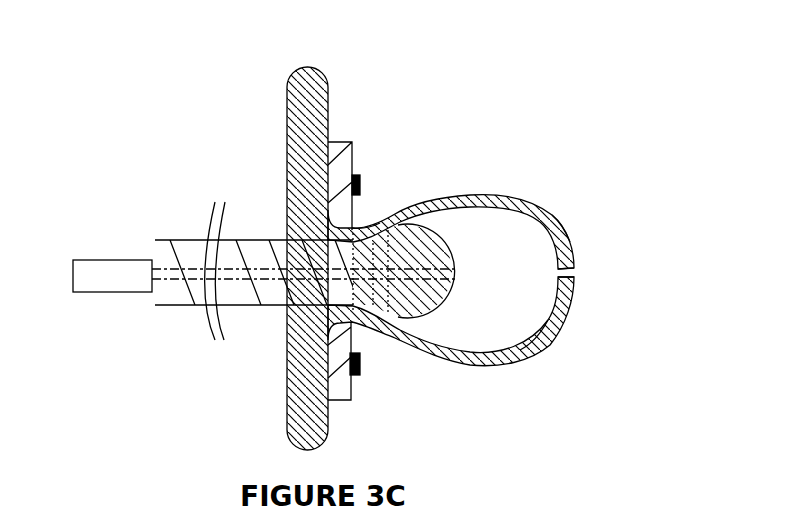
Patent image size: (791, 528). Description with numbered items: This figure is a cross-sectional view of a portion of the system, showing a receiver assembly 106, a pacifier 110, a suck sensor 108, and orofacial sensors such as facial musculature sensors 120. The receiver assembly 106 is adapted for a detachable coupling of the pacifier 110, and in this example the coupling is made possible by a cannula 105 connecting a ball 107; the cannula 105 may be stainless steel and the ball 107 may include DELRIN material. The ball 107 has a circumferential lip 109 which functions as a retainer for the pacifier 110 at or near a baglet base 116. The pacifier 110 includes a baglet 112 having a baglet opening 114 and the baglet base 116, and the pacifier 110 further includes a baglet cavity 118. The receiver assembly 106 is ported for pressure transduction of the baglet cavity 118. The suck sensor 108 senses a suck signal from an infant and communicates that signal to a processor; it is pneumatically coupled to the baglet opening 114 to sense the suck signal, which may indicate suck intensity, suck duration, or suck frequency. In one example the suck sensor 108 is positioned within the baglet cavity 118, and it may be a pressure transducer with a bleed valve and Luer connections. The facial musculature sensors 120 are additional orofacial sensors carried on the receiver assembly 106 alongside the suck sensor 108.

The cannula 105 is at (252, 240).
The receiver assembly 106 is at (279, 318).
The ball 107 is at (432, 231).
The suck sensor 108 is at (73, 262).
The circumferential lip 109 is at (408, 213).
The pacifier 110 is at (551, 385).
The baglet 112 is at (566, 230).
The baglet opening 114 is at (592, 276).
The baglet base 116 is at (360, 222).
The baglet cavity 118 is at (527, 305).
The facial musculature sensors 120 is at (360, 183).